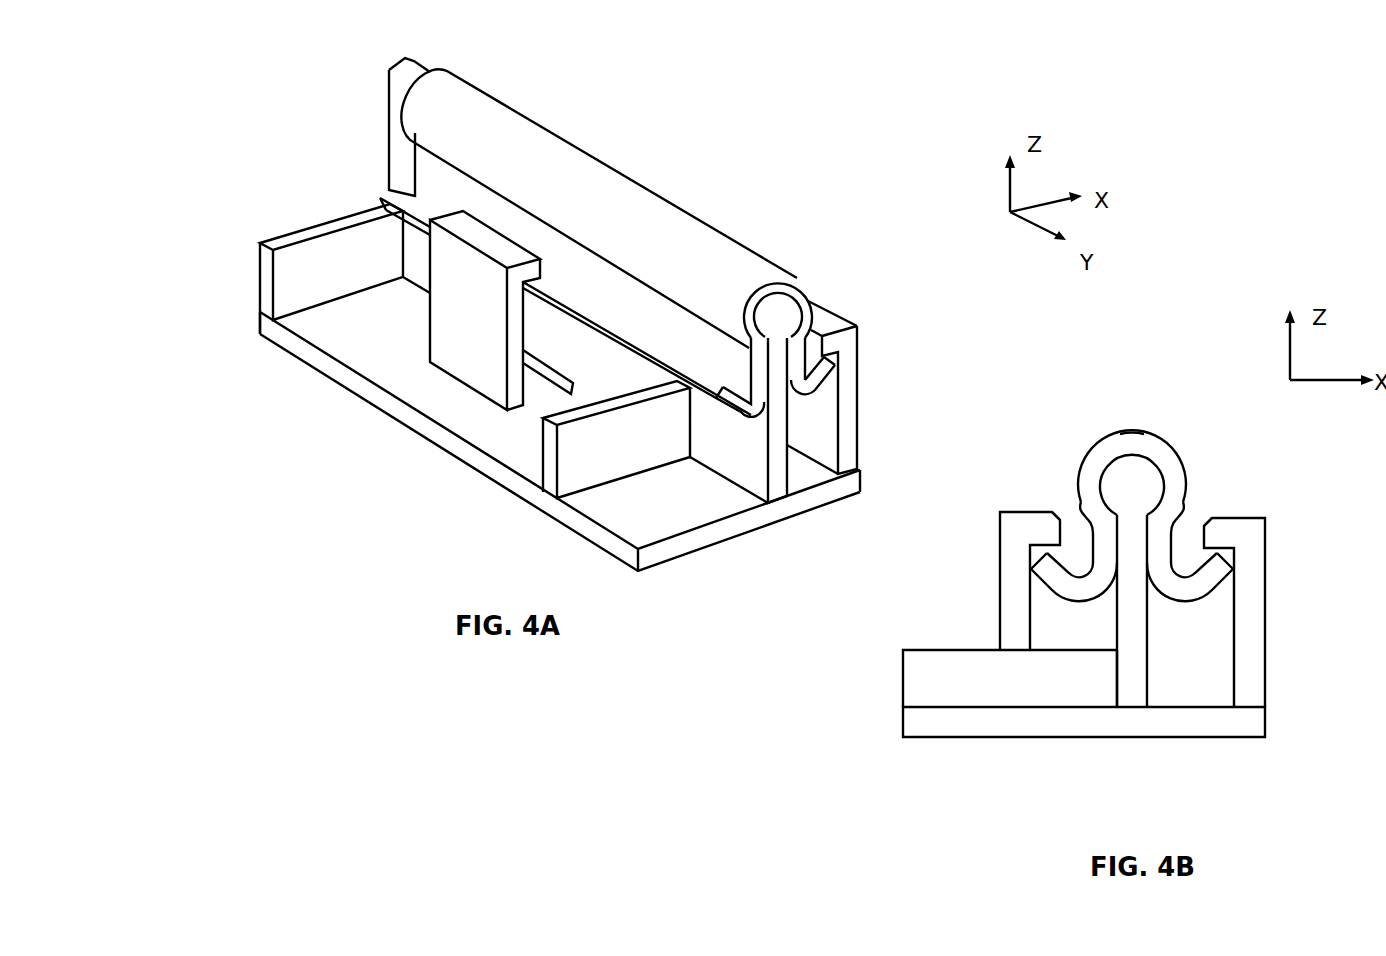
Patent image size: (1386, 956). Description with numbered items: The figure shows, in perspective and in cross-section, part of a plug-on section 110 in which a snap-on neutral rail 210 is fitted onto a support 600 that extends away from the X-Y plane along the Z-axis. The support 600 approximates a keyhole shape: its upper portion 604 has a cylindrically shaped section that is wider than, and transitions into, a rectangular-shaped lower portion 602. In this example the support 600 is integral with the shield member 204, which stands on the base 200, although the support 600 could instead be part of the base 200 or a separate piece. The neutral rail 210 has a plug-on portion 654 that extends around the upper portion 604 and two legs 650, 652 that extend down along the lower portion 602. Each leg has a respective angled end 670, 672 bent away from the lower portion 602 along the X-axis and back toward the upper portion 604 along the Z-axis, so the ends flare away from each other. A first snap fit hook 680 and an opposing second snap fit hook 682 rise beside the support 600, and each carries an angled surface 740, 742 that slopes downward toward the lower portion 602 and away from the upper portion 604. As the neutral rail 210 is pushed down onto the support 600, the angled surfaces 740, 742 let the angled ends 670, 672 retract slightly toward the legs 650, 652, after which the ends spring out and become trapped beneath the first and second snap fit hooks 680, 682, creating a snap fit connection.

In FIG. 4A, the plug-on section 110 is at (755, 121).
In FIG. 4A, the base 200 is at (486, 441).
In FIG. 4B, the base 200 is at (1000, 730).
In FIG. 4A, the shield member 204 is at (397, 133).
In FIG. 4B, the shield member 204 is at (940, 683).
In FIG. 4A, the neutral rail 210 is at (485, 122).
In FIG. 4B, the neutral rail 210 is at (1130, 450).
In FIG. 4A, the support 600 is at (782, 490).
In FIG. 4B, the support 600 is at (1127, 683).
In FIG. 4A, the lower portion 602 is at (778, 452).
In FIG. 4B, the lower portion 602 is at (1135, 657).
In FIG. 4A, the upper portion 604 is at (779, 317).
In FIG. 4B, the upper portion 604 is at (1135, 487).
In FIG. 4A, the first leg 650 is at (640, 300).
In FIG. 4B, the first leg 650 is at (1100, 539).
In FIG. 4A, the second leg 652 is at (810, 332).
In FIG. 4B, the second leg 652 is at (1163, 540).
In FIG. 4A, the plug-on portion 654 is at (777, 281).
In FIG. 4B, the plug-on portion 654 is at (1142, 430).
In FIG. 4A, the angled end 670 is at (741, 416).
In FIG. 4B, the angled end 670 is at (1084, 592).
In FIG. 4A, the angled end 672 is at (822, 383).
In FIG. 4B, the angled end 672 is at (1200, 592).
In FIG. 4A, the first snap fit hook 680 is at (457, 288).
In FIG. 4B, the first snap fit hook 680 is at (1005, 572).
In FIG. 4A, the second snap fit hook 682 is at (842, 353).
In FIG. 4B, the second snap fit hook 682 is at (1266, 578).
In FIG. 4B, the angled surface 740 is at (1057, 510).
In FIG. 4B, the angled surface 742 is at (1205, 520).